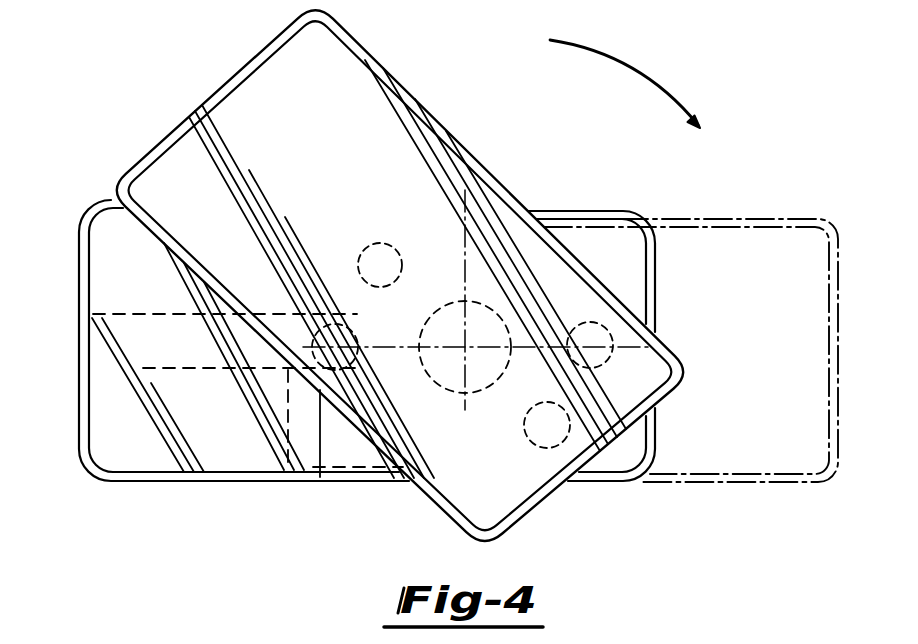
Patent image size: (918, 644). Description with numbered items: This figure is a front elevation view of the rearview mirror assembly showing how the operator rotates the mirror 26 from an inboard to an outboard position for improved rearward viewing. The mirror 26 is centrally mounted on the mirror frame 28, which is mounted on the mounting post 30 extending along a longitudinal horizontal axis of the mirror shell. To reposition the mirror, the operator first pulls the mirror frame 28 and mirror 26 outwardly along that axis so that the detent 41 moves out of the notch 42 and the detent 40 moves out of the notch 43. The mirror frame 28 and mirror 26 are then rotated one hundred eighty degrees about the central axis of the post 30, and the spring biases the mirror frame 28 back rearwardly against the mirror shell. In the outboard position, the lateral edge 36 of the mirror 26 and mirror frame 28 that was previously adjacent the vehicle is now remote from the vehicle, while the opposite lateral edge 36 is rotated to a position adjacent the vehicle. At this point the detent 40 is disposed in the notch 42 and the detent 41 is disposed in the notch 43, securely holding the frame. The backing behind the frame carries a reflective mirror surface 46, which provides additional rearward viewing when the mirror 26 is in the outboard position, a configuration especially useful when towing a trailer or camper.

The mirror 26 is at (387, 292).
The mirror frame 28 is at (180, 132).
The mounting post 30 is at (477, 333).
The lateral edge 36 is at (243, 78).
The detent 40 is at (548, 432).
The detent 41 is at (397, 262).
The notch 42 is at (338, 368).
The notch 43 is at (596, 331).
The reflective mirror surface 46 is at (120, 430).